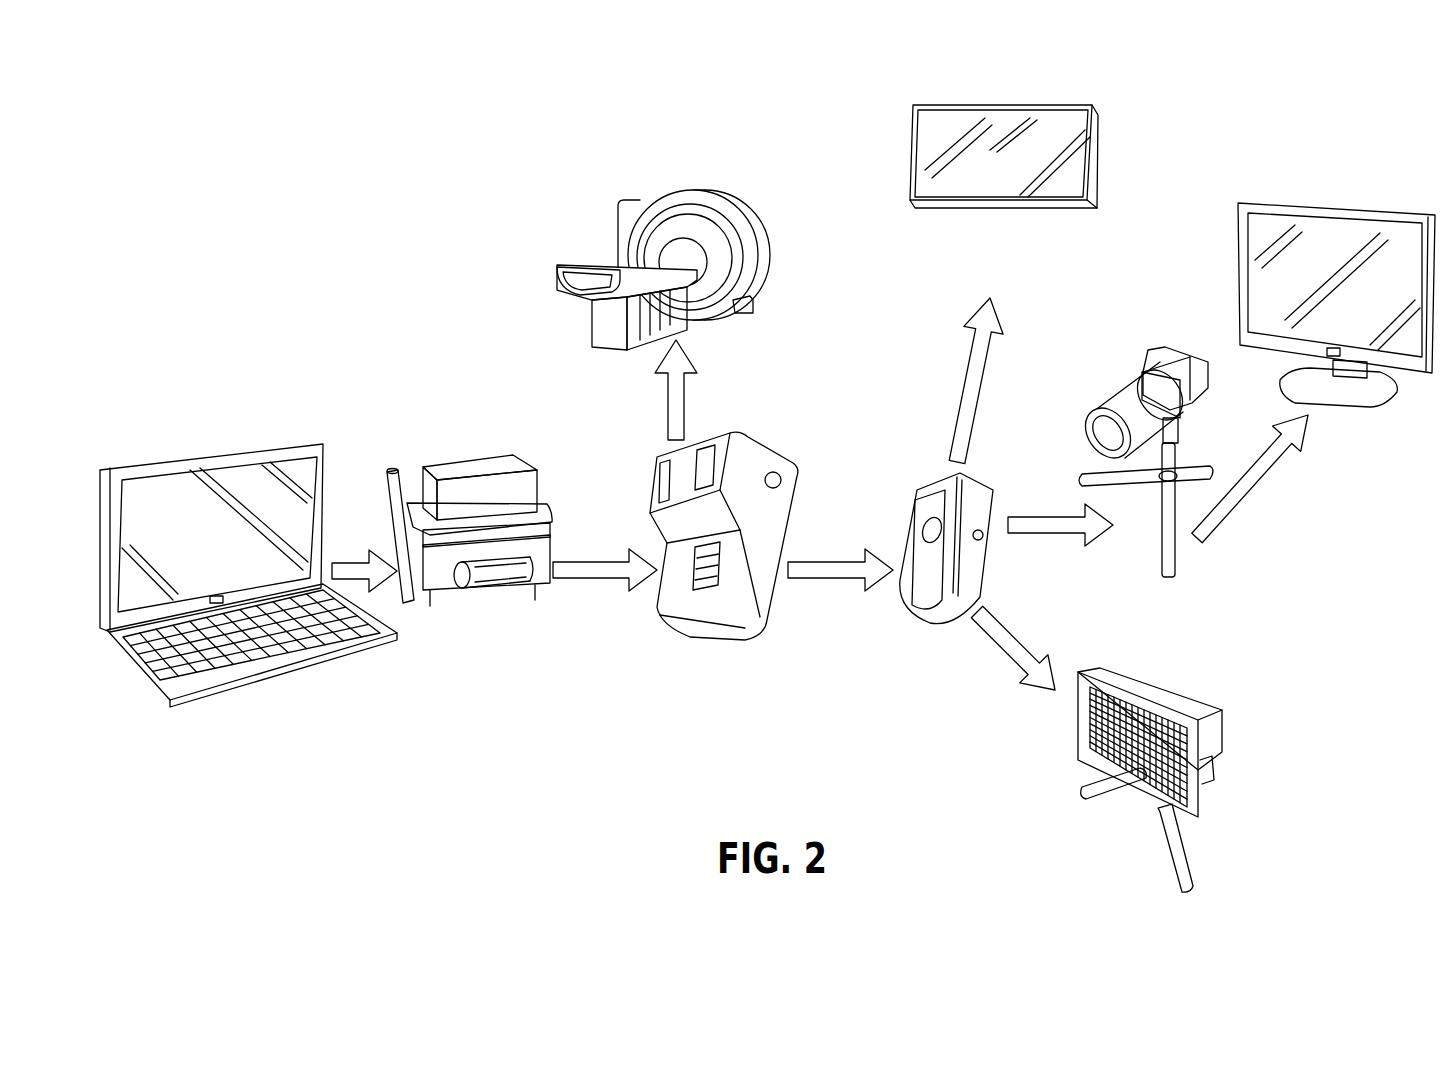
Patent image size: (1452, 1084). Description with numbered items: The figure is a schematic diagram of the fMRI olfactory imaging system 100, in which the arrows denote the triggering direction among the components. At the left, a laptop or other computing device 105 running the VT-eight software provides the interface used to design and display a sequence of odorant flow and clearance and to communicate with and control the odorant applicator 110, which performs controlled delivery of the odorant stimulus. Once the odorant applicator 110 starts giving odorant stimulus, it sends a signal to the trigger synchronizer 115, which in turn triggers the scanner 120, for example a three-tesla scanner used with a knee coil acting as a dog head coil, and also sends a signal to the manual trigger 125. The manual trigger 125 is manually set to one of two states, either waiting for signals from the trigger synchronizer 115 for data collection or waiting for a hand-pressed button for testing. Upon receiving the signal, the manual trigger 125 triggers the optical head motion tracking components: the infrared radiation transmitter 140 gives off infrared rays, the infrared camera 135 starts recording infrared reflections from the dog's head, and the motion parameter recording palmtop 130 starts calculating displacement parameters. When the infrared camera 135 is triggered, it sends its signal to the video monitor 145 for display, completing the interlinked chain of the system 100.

The fMRI olfactory imaging system 100 is at (1268, 103).
The laptop or other computing device 105 is at (195, 464).
The odorant applicator 110 is at (464, 462).
The trigger synchronizer 115 is at (773, 452).
The scanner 120 is at (693, 188).
The manual trigger 125 is at (987, 571).
The motion parameter recording palmtop 130 is at (1100, 155).
The infrared camera 135 is at (1120, 390).
The infrared radiation transmitter 140 is at (1222, 727).
The video monitor 145 is at (1343, 203).